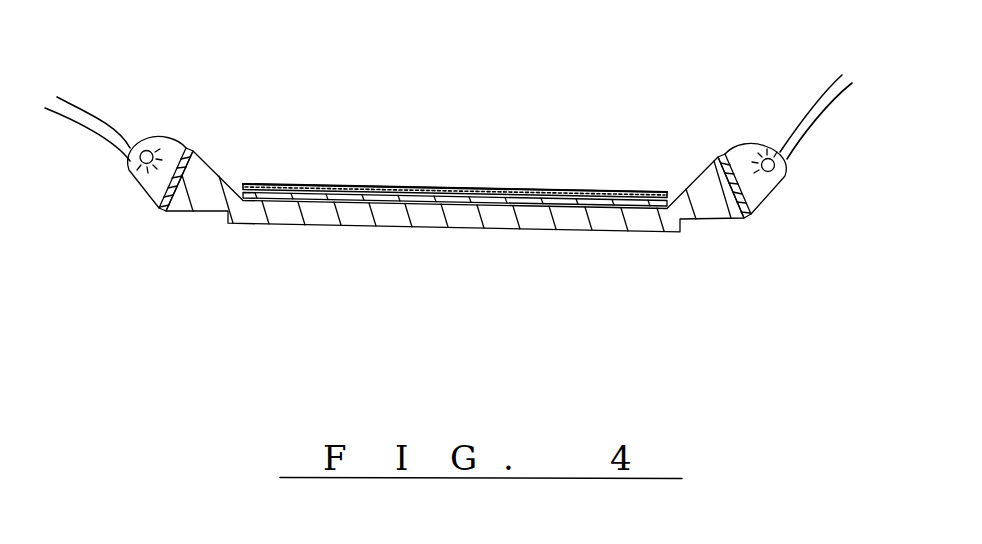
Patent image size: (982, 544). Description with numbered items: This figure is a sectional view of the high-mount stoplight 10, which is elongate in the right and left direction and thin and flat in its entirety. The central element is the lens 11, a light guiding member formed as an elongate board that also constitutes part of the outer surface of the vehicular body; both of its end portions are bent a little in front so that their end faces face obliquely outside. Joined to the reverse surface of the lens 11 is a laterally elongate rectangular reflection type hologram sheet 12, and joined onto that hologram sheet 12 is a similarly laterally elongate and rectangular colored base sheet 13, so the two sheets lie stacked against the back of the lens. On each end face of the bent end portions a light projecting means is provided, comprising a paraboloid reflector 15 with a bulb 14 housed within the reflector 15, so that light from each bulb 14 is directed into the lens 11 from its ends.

The high-mount stoplight 10 is at (455, 226).
The lens 11 is at (468, 232).
The reflection type hologram sheet 12 is at (533, 192).
The colored base sheet 13 is at (427, 186).
The bulb 14 is at (130, 177).
The paraboloid reflector 15 is at (177, 140).